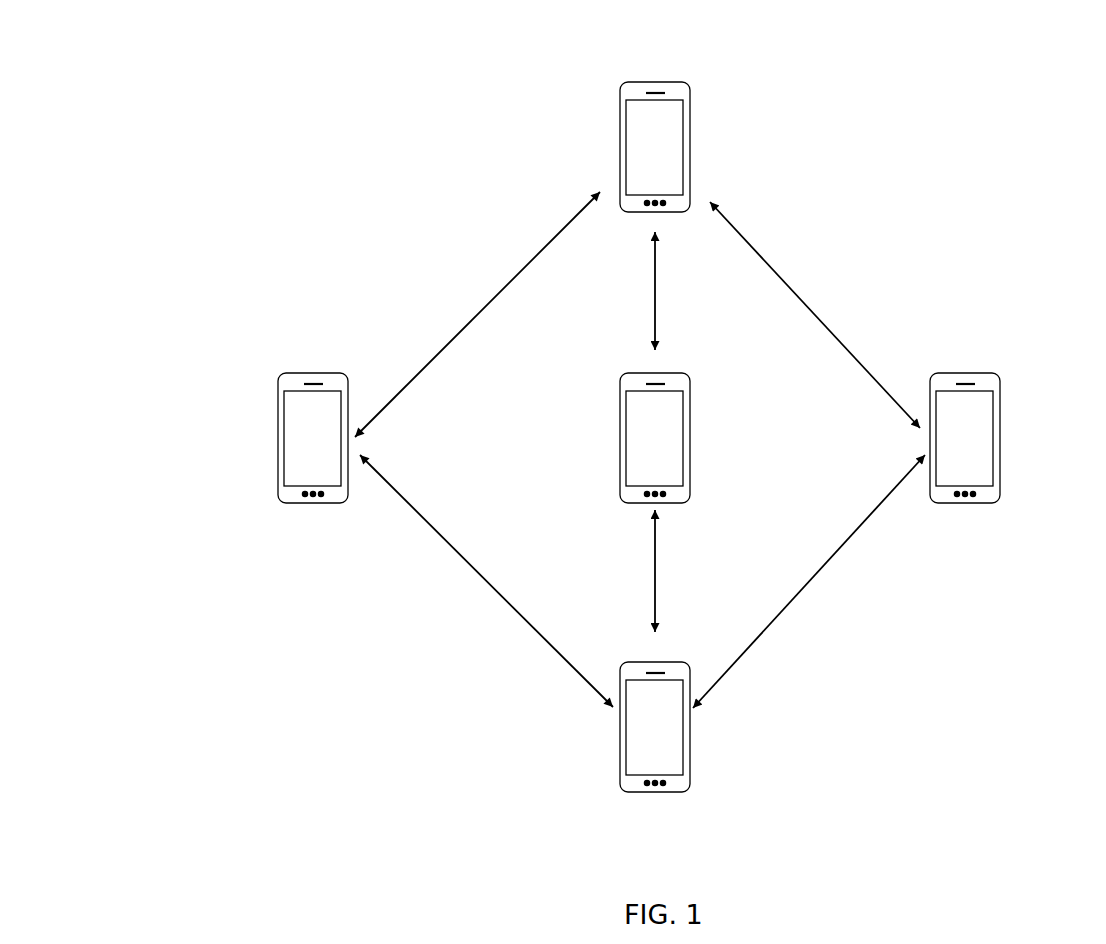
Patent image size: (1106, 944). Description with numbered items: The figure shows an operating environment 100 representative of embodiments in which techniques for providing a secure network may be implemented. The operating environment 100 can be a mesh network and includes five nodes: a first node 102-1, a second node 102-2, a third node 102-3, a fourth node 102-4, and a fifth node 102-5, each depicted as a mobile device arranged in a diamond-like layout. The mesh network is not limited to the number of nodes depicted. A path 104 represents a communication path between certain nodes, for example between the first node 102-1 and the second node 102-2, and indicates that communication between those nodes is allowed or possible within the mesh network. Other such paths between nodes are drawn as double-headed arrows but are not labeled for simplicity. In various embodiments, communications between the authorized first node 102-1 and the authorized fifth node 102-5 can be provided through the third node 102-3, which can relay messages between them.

The operating environment 100 is at (146, 27).
The first node 102-1 is at (686, 84).
The second node 102-2 is at (344, 376).
The third node 102-3 is at (686, 376).
The fourth node 102-4 is at (996, 376).
The fifth node 102-5 is at (686, 664).
The path 104 is at (505, 283).